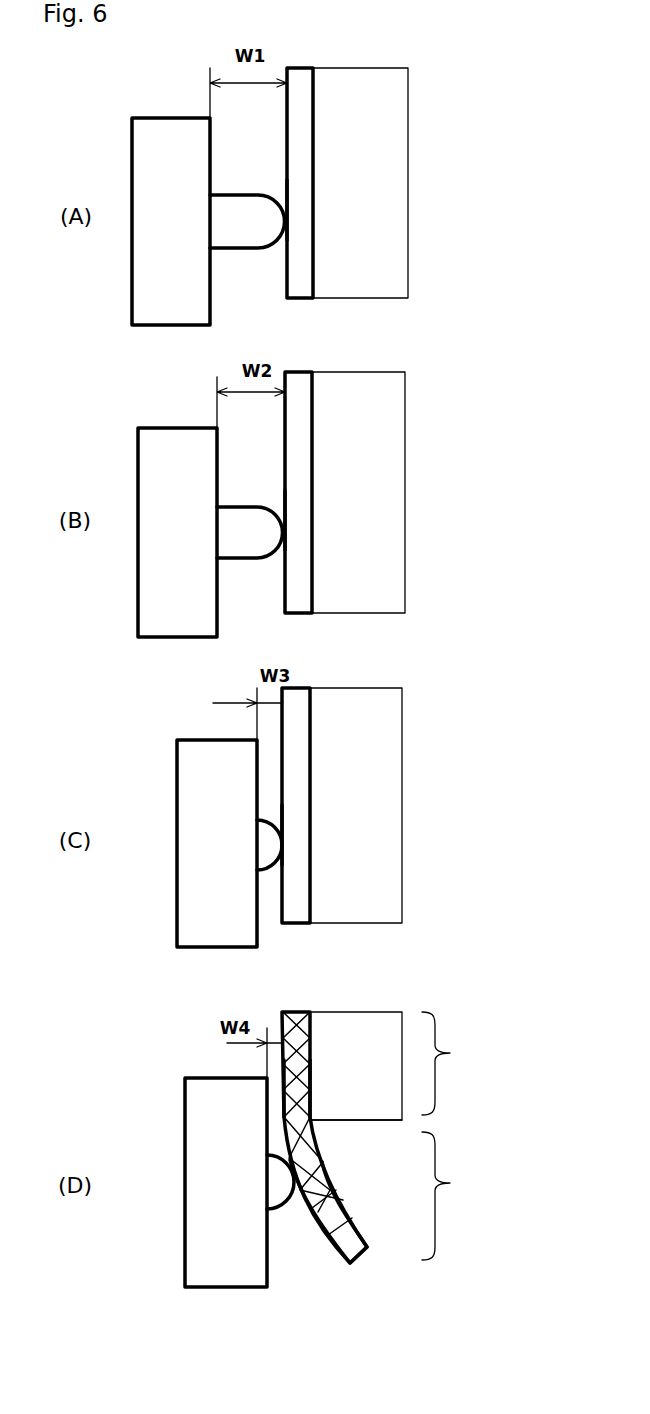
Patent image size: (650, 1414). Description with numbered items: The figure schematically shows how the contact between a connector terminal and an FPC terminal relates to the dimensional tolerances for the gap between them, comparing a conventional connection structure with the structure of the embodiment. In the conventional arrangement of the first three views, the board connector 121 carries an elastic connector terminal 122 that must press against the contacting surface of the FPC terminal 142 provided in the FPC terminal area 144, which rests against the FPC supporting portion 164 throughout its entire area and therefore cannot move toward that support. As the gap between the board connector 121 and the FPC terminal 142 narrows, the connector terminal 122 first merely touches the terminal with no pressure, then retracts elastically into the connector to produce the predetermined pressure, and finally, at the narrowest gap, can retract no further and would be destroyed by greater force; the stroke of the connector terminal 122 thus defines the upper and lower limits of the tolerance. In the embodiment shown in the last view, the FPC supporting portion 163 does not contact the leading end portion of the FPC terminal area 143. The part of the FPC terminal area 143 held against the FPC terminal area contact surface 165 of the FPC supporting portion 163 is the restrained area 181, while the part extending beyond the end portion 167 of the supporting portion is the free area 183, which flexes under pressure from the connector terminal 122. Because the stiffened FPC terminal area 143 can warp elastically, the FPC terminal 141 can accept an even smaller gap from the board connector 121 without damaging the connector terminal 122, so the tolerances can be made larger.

The board connector 121 is at (152, 214).
The connector terminal 122 is at (225, 253).
The FPC terminal 142 is at (288, 212).
The FPC terminal area 144 is at (305, 143).
The FPC supporting portion 164 is at (339, 258).
The FPC supporting portion 163 is at (313, 1015).
The FPC terminal area contact surface 165 is at (310, 1023).
The FPC terminal area 143 is at (313, 1083).
The FPC terminal 141 is at (312, 1197).
The end portion 167 is at (387, 1122).
The restrained area 181 is at (461, 1063).
The free area 183 is at (461, 1196).